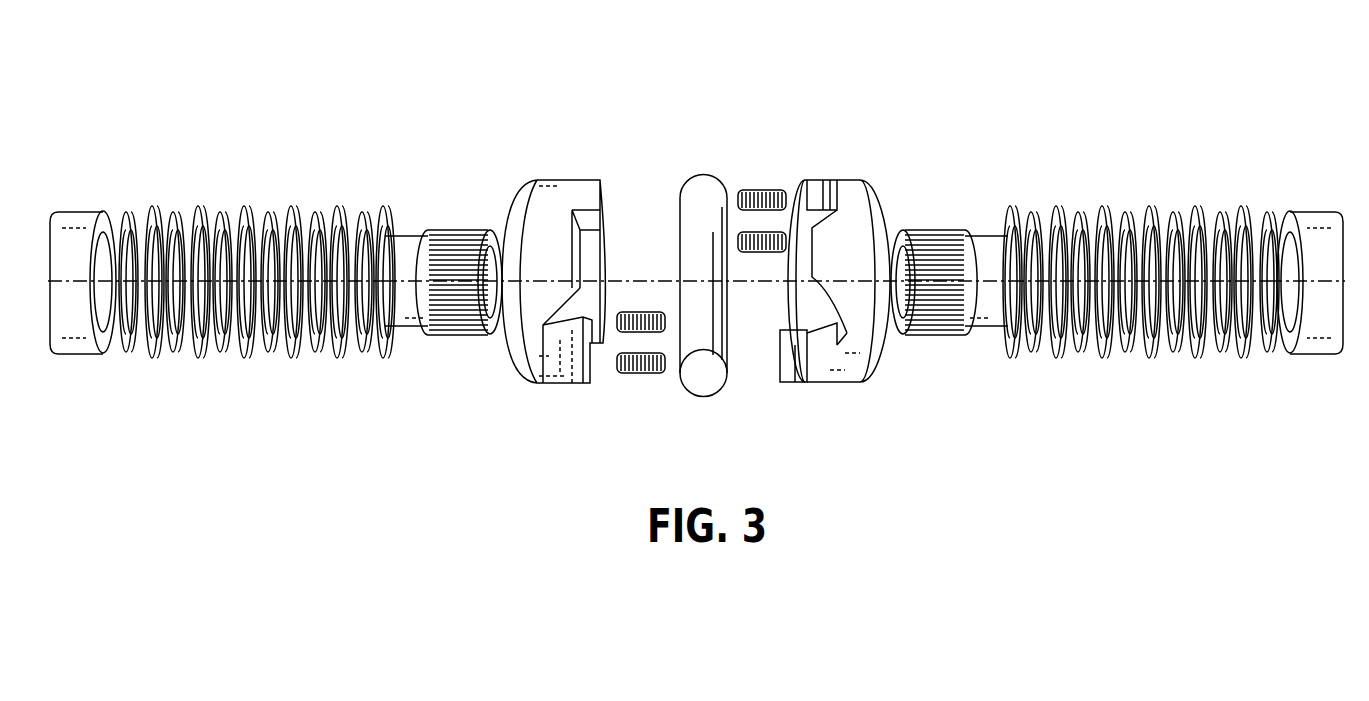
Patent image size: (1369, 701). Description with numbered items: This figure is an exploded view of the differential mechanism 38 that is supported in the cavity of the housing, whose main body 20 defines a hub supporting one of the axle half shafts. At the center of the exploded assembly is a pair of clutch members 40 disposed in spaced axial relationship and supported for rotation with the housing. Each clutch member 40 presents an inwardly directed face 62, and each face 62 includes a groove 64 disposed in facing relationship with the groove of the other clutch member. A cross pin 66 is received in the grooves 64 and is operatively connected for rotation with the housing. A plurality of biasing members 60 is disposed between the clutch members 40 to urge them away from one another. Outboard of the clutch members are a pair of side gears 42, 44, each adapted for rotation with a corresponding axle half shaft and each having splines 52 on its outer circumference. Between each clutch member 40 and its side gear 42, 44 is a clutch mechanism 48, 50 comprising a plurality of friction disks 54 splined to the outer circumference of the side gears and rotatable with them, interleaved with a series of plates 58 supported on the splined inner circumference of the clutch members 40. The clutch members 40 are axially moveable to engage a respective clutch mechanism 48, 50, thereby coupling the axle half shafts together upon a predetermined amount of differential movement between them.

The main body 20 is at (793, 384).
The differential mechanism 38 is at (812, 58).
The clutch members 40 is at (680, 292).
The side gear 42 is at (468, 230).
The side gear 44 is at (940, 230).
The clutch mechanism 48 is at (123, 175).
The clutch mechanism 50 is at (1010, 175).
The splines 52 is at (468, 335).
The friction disks 54 is at (178, 352).
The plates 58 is at (287, 353).
The biasing members 60 is at (767, 190).
The inwardly directed face 62 is at (600, 250).
The groove 64 is at (568, 320).
The cross pin 66 is at (705, 187).